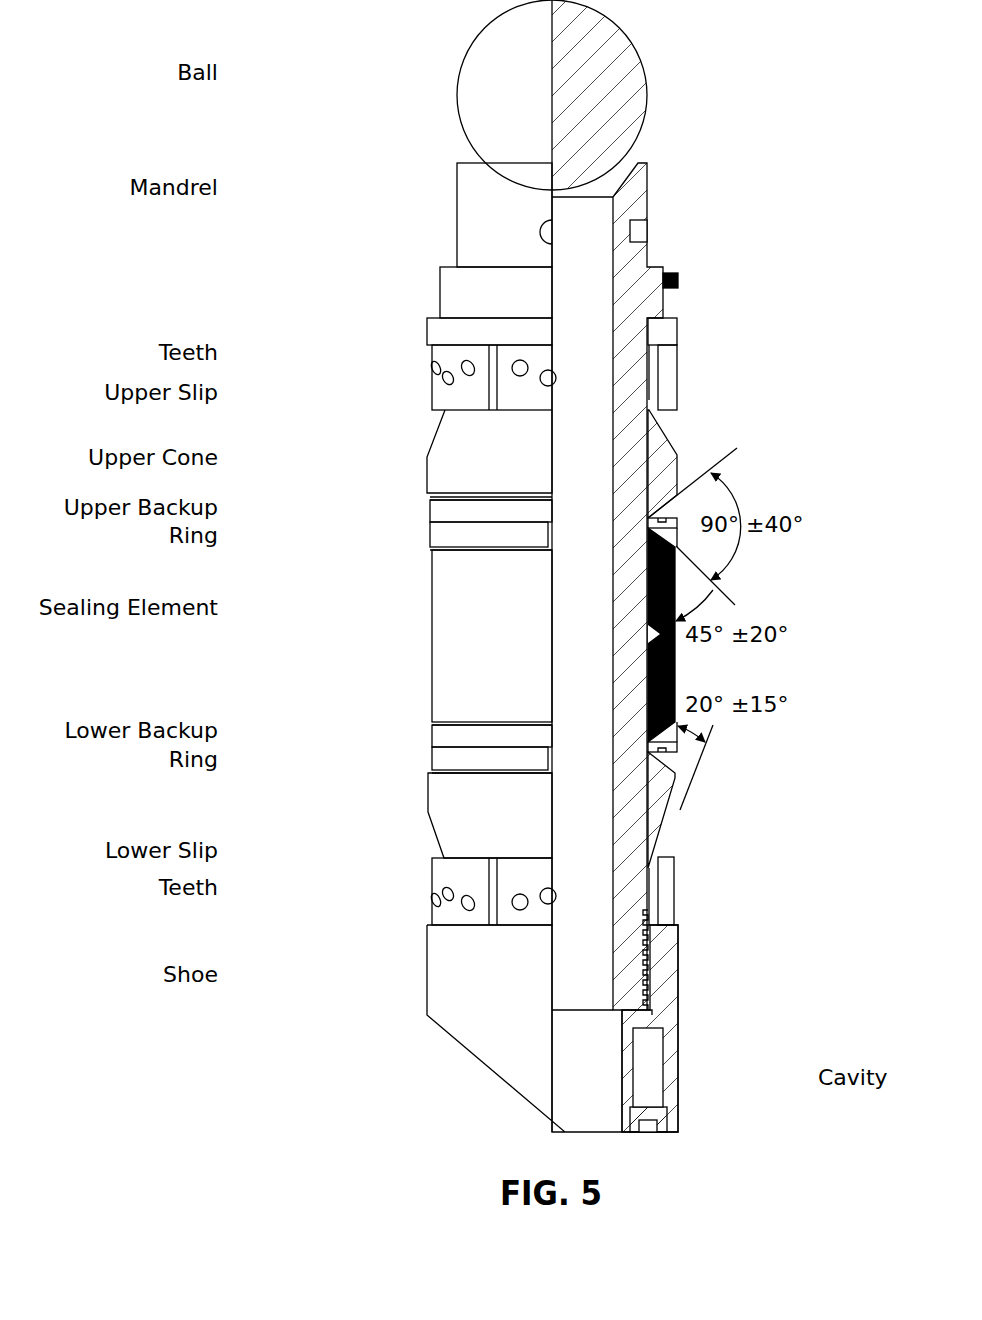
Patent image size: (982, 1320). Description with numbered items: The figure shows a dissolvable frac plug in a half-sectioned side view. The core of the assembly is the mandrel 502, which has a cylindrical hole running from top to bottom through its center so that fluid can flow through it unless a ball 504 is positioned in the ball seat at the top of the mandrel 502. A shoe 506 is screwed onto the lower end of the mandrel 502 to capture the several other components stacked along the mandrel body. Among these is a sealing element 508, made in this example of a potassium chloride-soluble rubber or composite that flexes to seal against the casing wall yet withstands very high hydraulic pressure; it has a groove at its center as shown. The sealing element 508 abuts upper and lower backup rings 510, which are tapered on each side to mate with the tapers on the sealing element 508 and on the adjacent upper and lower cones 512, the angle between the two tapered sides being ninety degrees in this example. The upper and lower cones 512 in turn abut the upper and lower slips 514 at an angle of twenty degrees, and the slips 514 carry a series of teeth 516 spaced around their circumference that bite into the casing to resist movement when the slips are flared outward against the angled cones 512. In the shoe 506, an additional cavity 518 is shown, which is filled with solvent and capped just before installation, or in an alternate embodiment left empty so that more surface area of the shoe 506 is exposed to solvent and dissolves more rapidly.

The mandrel 502 is at (452, 205).
The ball 504 is at (453, 90).
The shoe 506 is at (427, 993).
The sealing element 508 is at (432, 627).
The upper and lower backup rings 510 is at (430, 530).
The upper and lower cones 512 is at (428, 475).
The upper and lower slips 514 is at (432, 400).
The teeth 516 is at (432, 370).
The cavity 518 is at (662, 1093).